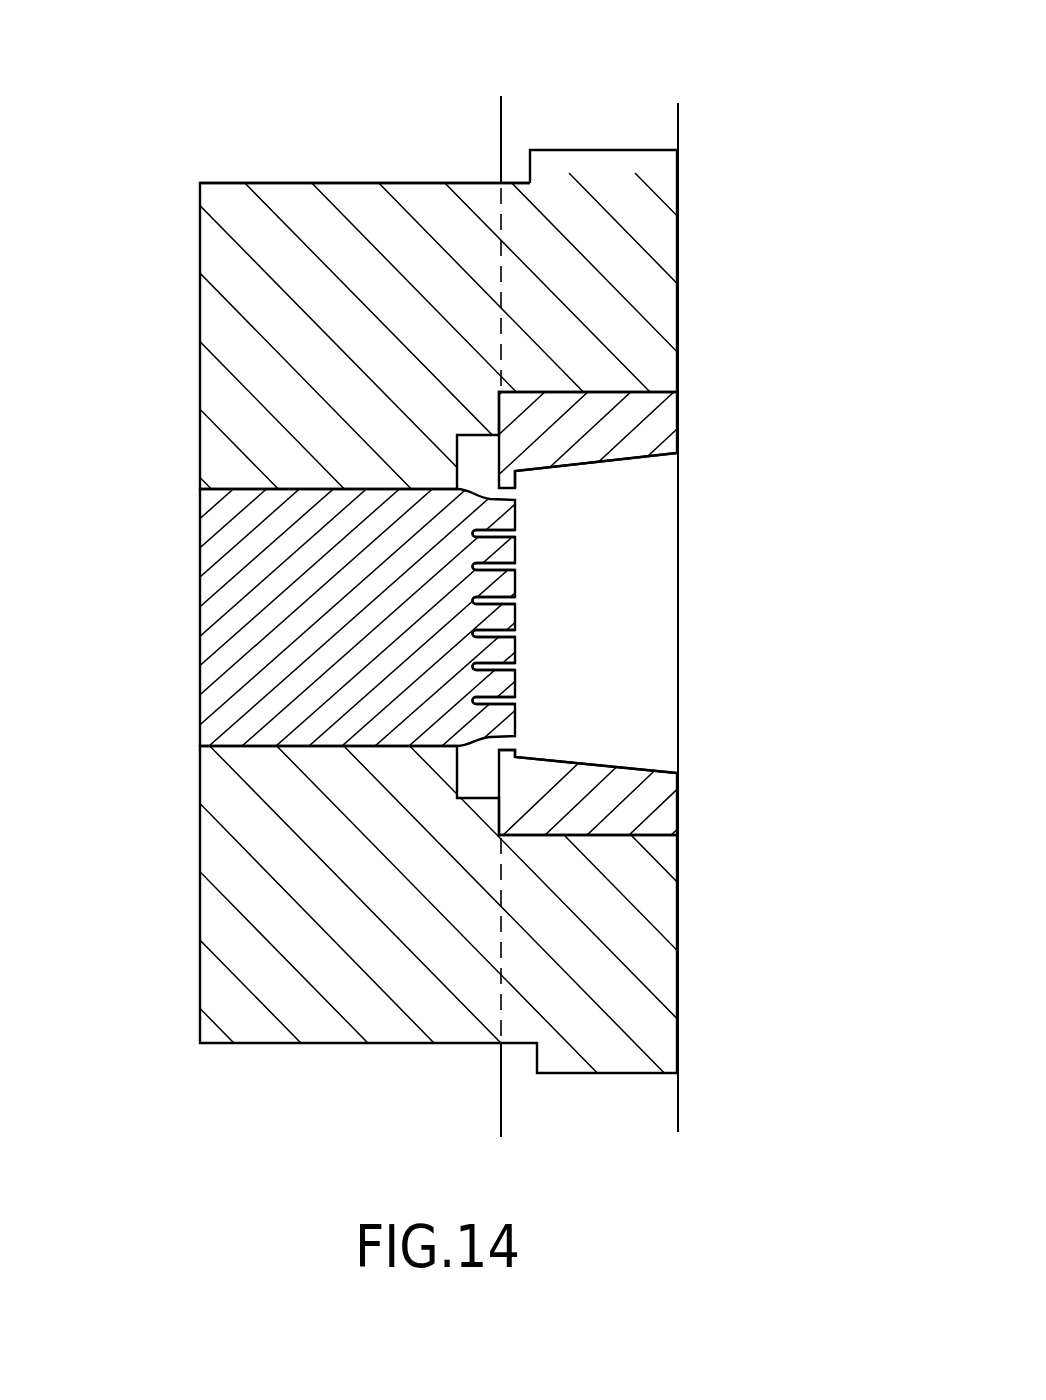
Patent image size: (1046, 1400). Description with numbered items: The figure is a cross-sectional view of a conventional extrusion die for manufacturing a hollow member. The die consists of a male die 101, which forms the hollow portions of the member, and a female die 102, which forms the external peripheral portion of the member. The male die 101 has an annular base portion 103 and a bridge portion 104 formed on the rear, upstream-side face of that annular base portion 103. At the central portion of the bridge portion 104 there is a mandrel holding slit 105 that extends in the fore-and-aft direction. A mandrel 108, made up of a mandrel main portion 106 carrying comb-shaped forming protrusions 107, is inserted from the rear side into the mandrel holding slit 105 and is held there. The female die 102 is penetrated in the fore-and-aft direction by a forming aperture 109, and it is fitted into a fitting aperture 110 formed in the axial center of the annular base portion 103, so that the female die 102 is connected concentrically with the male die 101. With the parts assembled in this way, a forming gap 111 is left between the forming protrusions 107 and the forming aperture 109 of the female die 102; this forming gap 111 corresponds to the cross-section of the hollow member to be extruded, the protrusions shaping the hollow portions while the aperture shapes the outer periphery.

The male die 101 is at (277, 182).
The female die 102 is at (618, 390).
The annular base portion 103 is at (590, 177).
The bridge portion 104 is at (238, 368).
The mandrel holding slit 105 is at (314, 745).
The mandrel main portion 106 is at (273, 625).
The forming protrusions 107 is at (517, 518).
The mandrel 108 is at (402, 602).
The forming aperture 109 is at (505, 743).
The fitting aperture 110 is at (610, 835).
The forming gap 111 is at (516, 492).